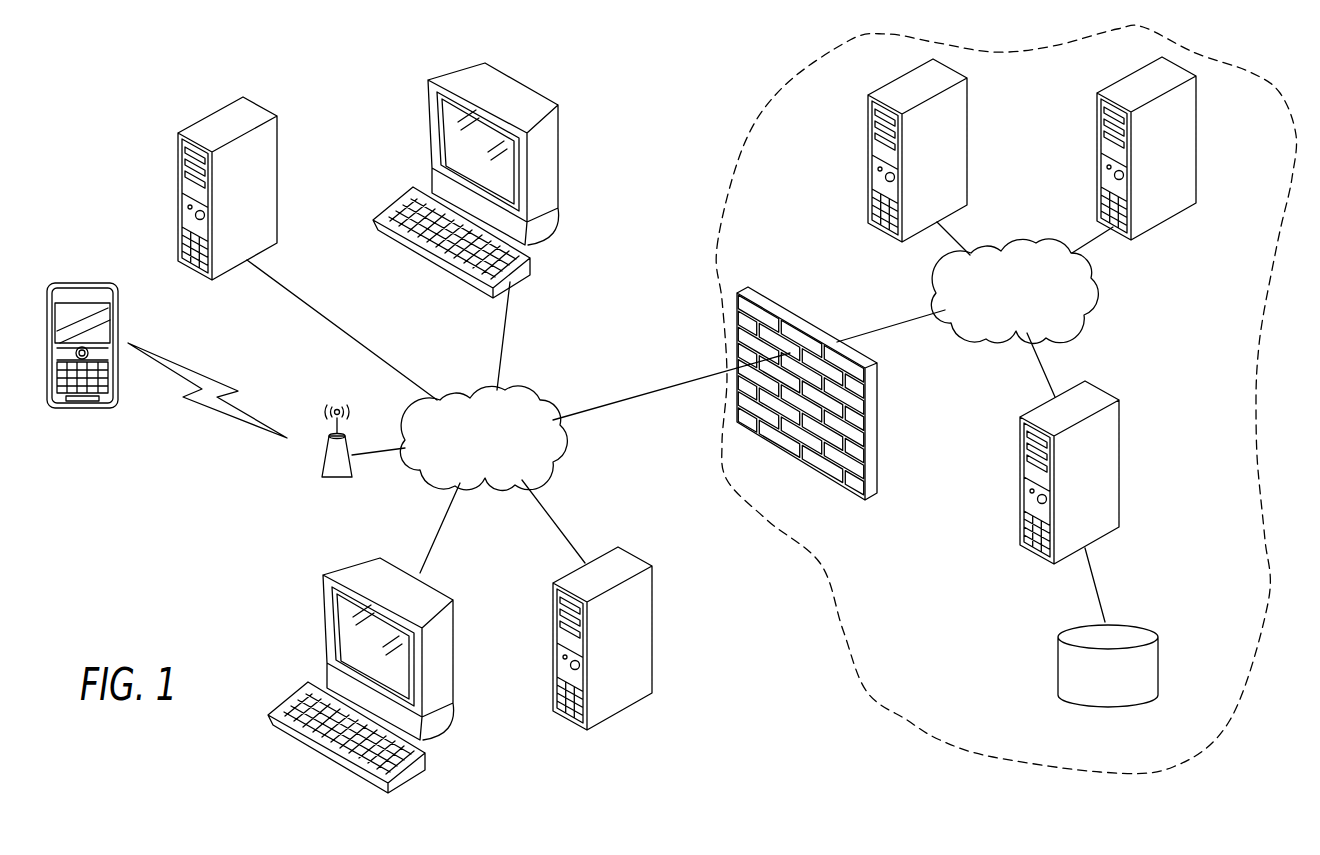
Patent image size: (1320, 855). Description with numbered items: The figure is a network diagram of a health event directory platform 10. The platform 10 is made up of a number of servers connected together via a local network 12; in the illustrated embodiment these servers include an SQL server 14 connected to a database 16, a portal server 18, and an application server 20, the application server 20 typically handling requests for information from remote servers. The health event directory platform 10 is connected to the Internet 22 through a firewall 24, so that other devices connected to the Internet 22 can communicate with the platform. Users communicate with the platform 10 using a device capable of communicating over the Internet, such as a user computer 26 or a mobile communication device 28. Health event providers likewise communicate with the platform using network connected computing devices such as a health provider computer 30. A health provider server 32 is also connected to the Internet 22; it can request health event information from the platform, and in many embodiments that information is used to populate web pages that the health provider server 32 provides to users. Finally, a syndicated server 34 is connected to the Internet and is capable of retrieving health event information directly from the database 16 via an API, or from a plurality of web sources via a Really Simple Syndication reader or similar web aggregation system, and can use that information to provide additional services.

The health event directory platform 10 is at (867, 693).
The local network 12 is at (1093, 290).
The SQL server 14 is at (1120, 463).
The database 16 is at (1158, 665).
The portal server 18 is at (868, 157).
The application server 20 is at (1097, 155).
The Internet 22 is at (563, 442).
The firewall 24 is at (800, 316).
The user computer 26 is at (428, 121).
The mobile communication device 28 is at (84, 283).
The health provider computer 30 is at (327, 753).
The health provider server 32 is at (618, 713).
The syndicated server 34 is at (213, 113).